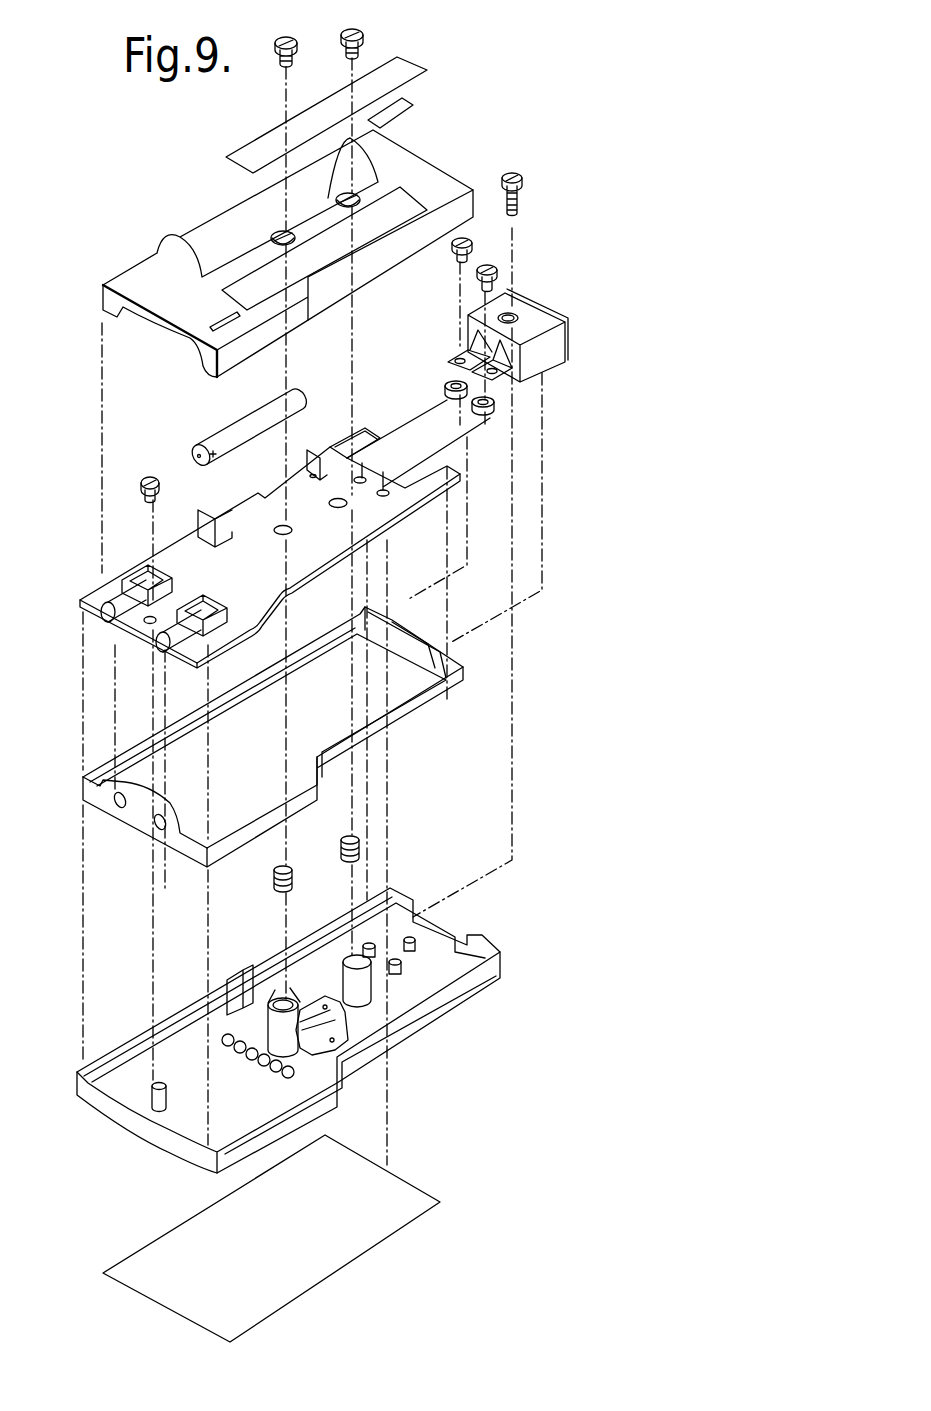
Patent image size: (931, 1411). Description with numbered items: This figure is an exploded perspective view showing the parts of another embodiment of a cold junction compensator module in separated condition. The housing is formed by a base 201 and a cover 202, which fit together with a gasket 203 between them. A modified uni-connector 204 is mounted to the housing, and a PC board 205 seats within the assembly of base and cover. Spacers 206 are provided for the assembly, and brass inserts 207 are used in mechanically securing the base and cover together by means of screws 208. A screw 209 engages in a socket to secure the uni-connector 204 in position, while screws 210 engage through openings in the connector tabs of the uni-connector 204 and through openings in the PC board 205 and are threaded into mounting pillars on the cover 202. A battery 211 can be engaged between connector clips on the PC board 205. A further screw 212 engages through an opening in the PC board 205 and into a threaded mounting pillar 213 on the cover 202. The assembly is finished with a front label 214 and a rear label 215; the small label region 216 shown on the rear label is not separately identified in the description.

The base 201 is at (433, 170).
The cover 202 is at (117, 1083).
The gasket 203 is at (413, 708).
The modified uni-connector 204 is at (537, 353).
The PC board 205 is at (282, 575).
The spacers 206 is at (472, 408).
The brass inserts 207 is at (365, 1000).
The screws 208 is at (341, 33).
The screw 209 is at (518, 199).
The screws 210 is at (497, 271).
The battery 211 is at (230, 433).
The screw 212 is at (147, 477).
The threaded mounting pillar 213 is at (158, 1110).
The front label 214 is at (350, 1247).
The rear label 215 is at (253, 147).
The window 216 is at (402, 107).